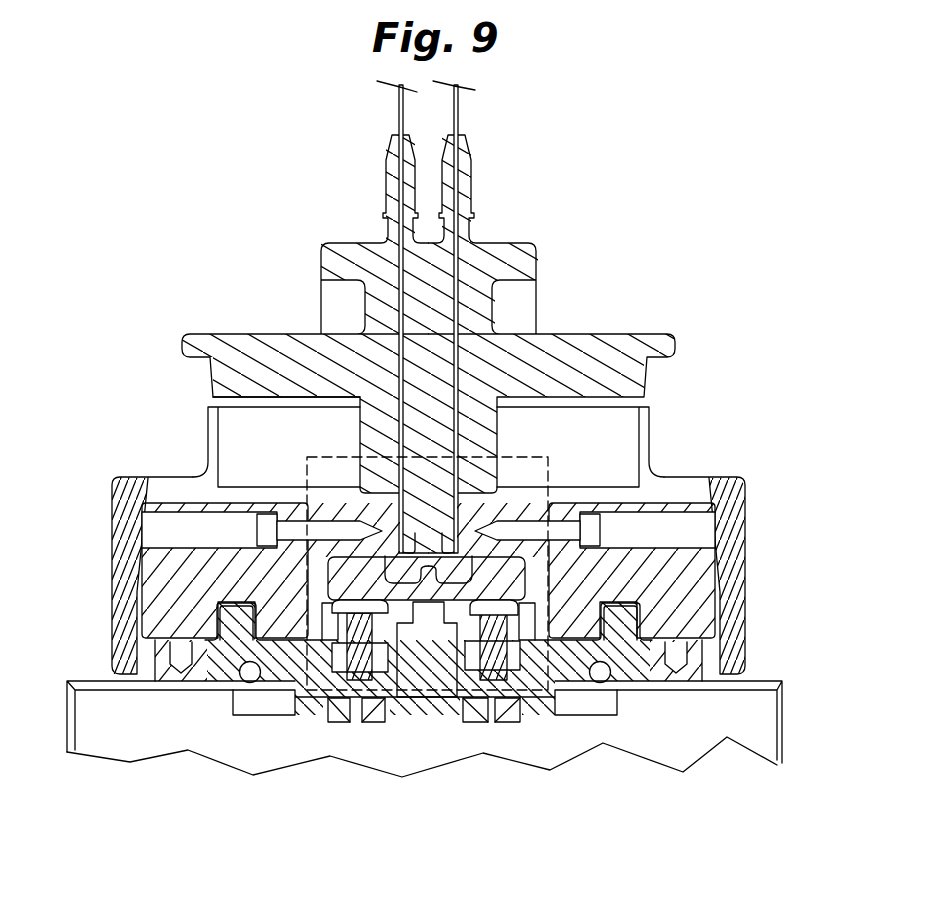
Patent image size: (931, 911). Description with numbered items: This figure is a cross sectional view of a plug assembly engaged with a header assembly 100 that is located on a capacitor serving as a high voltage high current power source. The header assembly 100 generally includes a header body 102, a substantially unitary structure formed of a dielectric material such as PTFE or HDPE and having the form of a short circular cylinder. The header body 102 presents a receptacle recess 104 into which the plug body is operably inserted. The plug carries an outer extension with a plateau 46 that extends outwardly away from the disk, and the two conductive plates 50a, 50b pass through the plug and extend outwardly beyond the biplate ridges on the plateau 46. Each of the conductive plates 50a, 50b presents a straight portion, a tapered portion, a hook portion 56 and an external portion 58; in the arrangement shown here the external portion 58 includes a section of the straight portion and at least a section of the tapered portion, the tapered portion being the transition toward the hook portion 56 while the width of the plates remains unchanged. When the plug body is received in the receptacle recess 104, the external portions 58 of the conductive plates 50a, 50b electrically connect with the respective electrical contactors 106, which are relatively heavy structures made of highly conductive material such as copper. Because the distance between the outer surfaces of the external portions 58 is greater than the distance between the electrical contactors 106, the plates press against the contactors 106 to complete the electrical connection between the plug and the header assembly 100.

The plateau 46 is at (500, 250).
The conductive plate 50a is at (398, 113).
The conductive plate 50b is at (459, 112).
The hook portion 56 is at (484, 610).
The external portion 58 is at (460, 548).
The header assembly 100 is at (727, 463).
The header body 102 is at (233, 455).
The receptacle recess 104 is at (363, 450).
The electrical contactor 106 is at (213, 490).